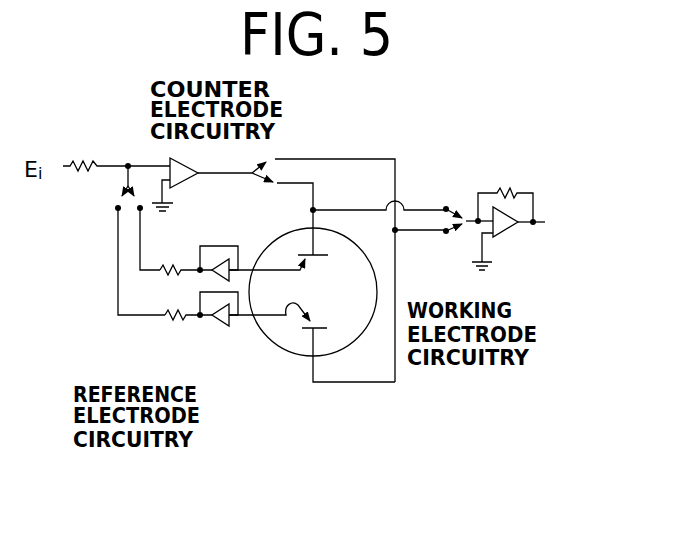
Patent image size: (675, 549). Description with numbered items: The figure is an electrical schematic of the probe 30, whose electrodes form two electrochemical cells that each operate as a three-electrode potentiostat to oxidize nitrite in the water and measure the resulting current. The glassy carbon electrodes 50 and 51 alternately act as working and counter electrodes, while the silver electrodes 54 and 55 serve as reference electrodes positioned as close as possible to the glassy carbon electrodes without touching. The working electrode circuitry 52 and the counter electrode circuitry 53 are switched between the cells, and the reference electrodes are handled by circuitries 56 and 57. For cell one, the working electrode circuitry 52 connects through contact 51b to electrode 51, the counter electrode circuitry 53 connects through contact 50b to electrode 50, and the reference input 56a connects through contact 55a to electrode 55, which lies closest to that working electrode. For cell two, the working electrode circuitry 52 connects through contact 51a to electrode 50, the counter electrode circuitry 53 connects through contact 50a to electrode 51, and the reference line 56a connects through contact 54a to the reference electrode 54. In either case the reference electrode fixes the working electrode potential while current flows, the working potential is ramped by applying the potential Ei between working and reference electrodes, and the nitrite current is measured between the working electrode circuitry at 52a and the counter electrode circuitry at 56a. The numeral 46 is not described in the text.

The electrochemical sensor 46 is at (53, 0).
The probe 30 is at (256, 332).
The glassy carbon electrode 50 is at (322, 258).
The contact 50a is at (276, 157).
The contact 50b is at (280, 182).
The glassy carbon electrode 51 is at (322, 326).
The contact 51a is at (446, 206).
The contact 51b is at (446, 234).
The working electrode circuitry 52 is at (506, 181).
The working electrode circuitry output 52a is at (545, 226).
The counter electrode circuitry 53 is at (206, 168).
The silver electrode 54 is at (273, 280).
The contact 54a is at (141, 213).
The silver electrode 55 is at (269, 325).
The contact 55a is at (117, 212).
The reference electrode circuitry 56 is at (219, 231).
The reference electrode input 56a is at (126, 163).
The reference electrode circuitry 57 is at (212, 324).